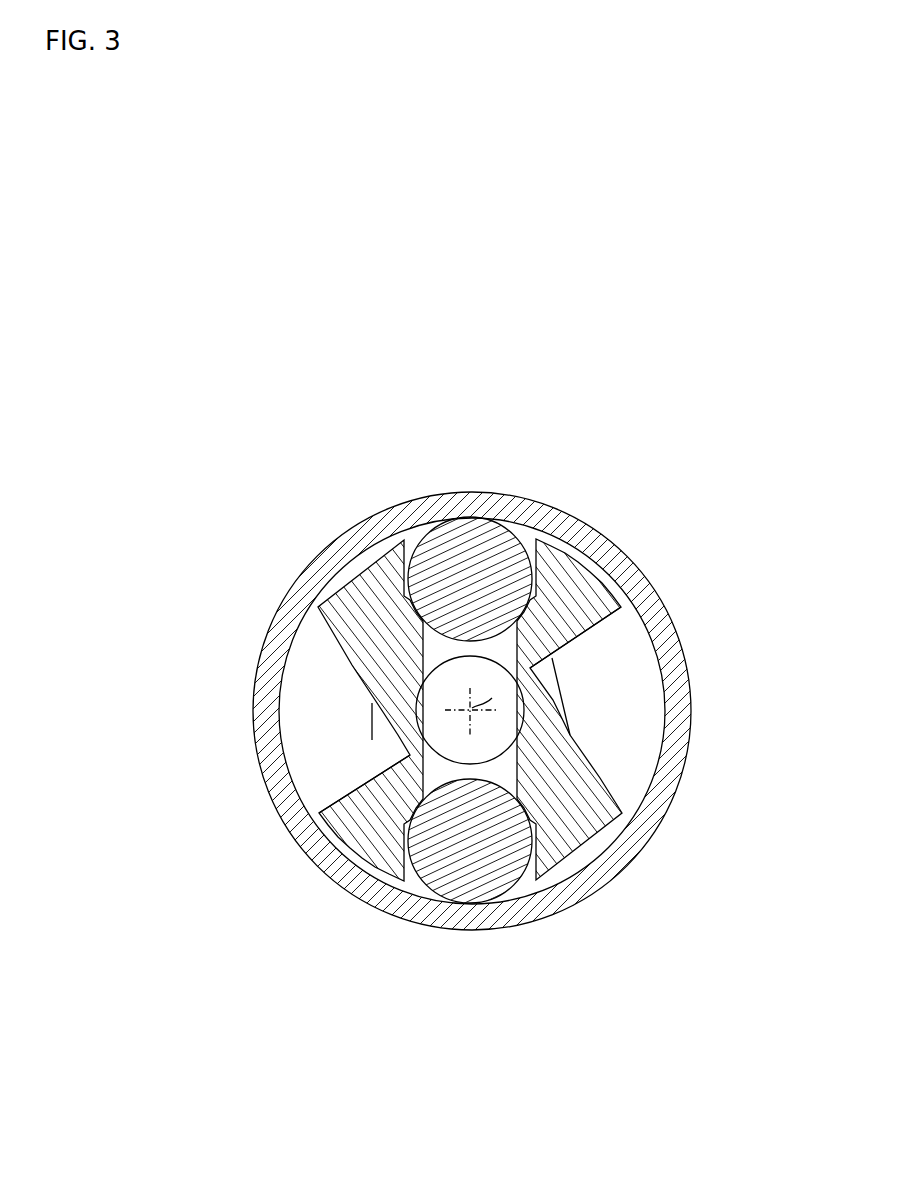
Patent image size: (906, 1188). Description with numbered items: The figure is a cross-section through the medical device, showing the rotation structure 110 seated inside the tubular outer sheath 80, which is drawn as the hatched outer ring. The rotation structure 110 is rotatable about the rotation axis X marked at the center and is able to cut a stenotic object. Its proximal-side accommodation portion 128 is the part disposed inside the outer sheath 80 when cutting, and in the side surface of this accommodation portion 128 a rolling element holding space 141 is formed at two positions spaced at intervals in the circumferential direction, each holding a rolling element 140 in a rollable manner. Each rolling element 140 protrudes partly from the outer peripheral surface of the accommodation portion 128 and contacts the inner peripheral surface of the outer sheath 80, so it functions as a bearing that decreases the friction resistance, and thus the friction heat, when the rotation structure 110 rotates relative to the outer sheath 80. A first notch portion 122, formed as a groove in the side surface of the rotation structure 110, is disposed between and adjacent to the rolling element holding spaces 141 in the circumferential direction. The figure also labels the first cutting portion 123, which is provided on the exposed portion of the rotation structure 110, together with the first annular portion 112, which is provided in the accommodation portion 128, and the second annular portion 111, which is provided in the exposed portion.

The outer sheath 80 is at (678, 656).
The rotation structure 110 is at (586, 560).
The second annular portion 111 is at (372, 740).
The first annular portion 112 is at (357, 565).
The first notch portion 122 is at (352, 670).
The first cutting portion 123 is at (621, 607).
The accommodation portion 128 is at (335, 593).
The rolling element 140 is at (455, 543).
The rolling element holding space 141 is at (527, 538).